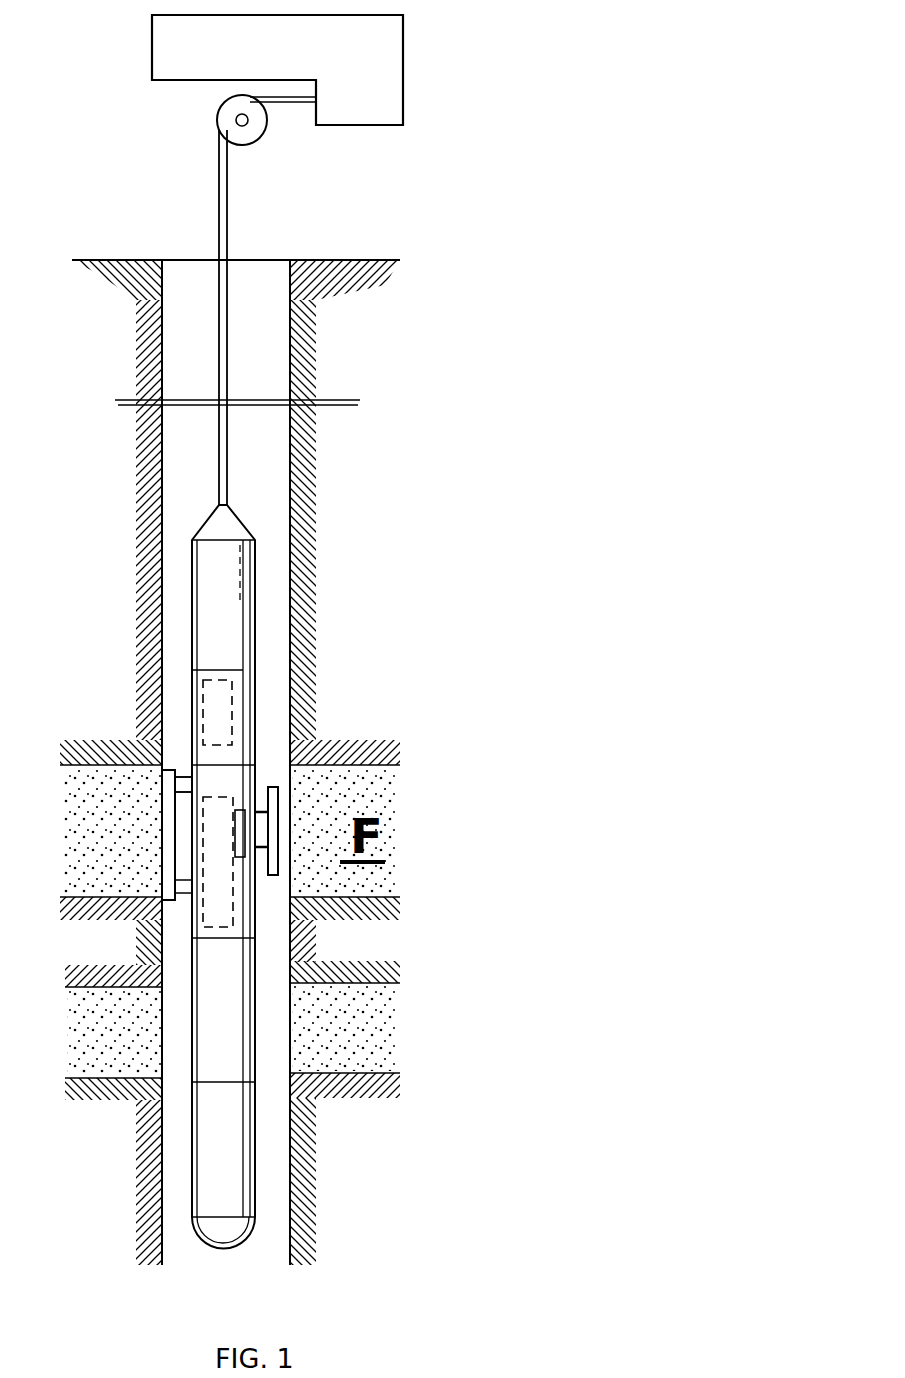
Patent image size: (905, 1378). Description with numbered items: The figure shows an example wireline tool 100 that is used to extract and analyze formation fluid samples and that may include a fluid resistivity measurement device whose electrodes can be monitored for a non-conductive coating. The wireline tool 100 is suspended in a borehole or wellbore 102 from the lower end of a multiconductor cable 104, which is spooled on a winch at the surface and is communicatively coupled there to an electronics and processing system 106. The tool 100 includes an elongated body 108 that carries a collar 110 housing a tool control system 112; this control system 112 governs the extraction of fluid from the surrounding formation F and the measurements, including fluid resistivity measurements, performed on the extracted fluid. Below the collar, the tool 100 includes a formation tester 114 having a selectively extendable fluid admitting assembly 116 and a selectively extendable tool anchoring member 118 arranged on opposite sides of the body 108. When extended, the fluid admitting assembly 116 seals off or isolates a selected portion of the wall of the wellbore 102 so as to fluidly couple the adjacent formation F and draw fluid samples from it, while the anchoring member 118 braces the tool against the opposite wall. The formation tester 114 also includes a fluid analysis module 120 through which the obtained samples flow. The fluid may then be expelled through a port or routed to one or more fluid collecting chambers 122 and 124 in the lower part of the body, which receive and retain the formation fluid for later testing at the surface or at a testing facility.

The wireline tool 100 is at (440, 712).
The wellbore 102 is at (292, 507).
The multiconductor cable 104 is at (223, 302).
The electronics and processing system 106 is at (378, 80).
The elongated body 108 is at (215, 628).
The collar 110 is at (242, 705).
The tool control system 112 is at (208, 702).
The formation tester 114 is at (203, 777).
The fluid admitting assembly 116 is at (268, 833).
The tool anchoring member 118 is at (167, 850).
The fluid analysis module 120 is at (176, 806).
The fluid collecting chamber 122 is at (213, 1012).
The fluid collecting chamber 124 is at (222, 1160).